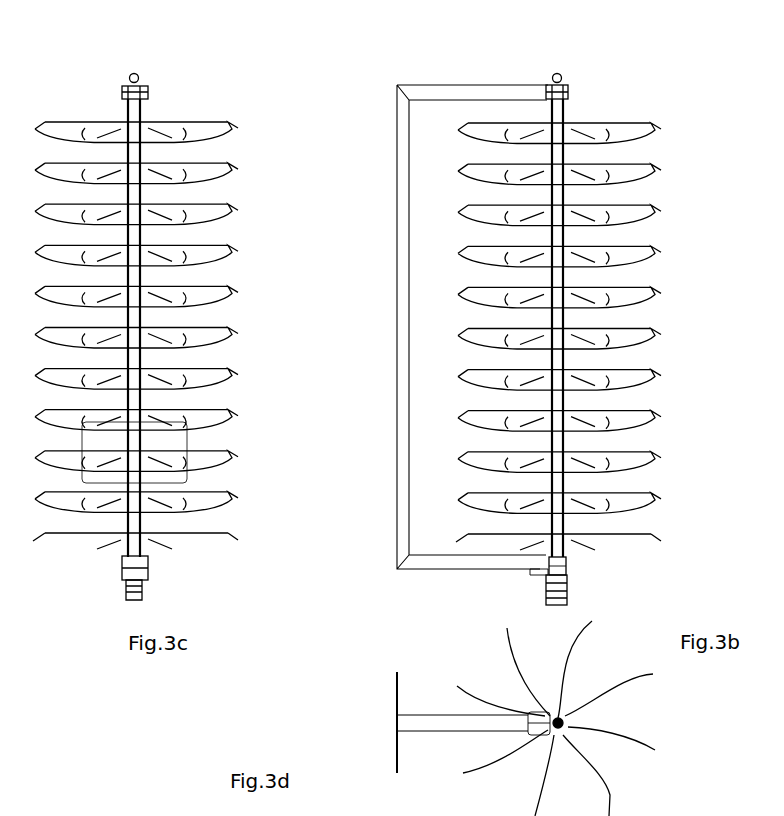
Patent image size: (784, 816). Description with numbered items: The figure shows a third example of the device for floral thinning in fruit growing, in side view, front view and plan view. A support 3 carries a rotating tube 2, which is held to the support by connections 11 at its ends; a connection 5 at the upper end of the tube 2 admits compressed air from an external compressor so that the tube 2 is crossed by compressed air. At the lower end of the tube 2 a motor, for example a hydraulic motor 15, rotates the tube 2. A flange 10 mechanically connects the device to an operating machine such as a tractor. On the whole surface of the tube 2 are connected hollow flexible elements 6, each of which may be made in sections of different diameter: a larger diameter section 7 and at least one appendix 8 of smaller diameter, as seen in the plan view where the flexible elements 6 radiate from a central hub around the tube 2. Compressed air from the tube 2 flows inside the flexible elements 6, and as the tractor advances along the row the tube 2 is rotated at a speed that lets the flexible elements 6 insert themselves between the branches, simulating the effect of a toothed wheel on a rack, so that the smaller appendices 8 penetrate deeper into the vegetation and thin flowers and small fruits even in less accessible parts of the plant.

In FIG. 3C, the tube 2 is at (147, 113).
In FIG. 3B, the tube 2 is at (569, 114).
In FIG. 3B, the support 3 is at (396, 251).
In FIG. 3B, the connection 5 is at (569, 79).
In FIG. 3D, the flexible elements 6 is at (648, 650).
In FIG. 3D, the larger diameter section 7 is at (593, 736).
In FIG. 3D, the appendix of smaller diameter 8 is at (659, 746).
In FIG. 3D, the flange 10 is at (395, 699).
In FIG. 3C, the connections 11 is at (120, 94).
In FIG. 3B, the hydraulic motor 15 is at (617, 587).